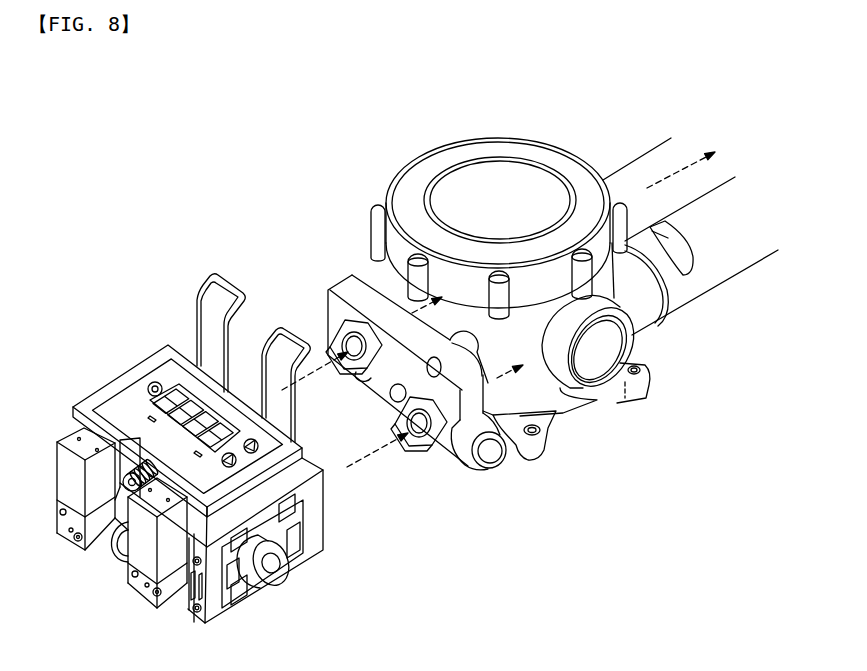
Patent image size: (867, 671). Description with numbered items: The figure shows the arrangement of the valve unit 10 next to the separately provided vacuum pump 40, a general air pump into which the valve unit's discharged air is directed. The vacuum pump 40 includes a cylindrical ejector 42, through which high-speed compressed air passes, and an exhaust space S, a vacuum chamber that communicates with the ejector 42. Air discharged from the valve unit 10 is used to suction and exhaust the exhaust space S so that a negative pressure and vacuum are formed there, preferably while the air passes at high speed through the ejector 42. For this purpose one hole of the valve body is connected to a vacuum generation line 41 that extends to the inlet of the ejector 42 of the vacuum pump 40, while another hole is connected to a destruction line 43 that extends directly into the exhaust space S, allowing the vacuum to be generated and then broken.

The controller unit 10 is at (88, 590).
The vacuum pump 40 is at (592, 437).
The vacuum generation line 41 is at (696, 161).
The ejector 42 is at (649, 165).
The destruction line 43 is at (598, 350).
The exhaust space S is at (509, 347).